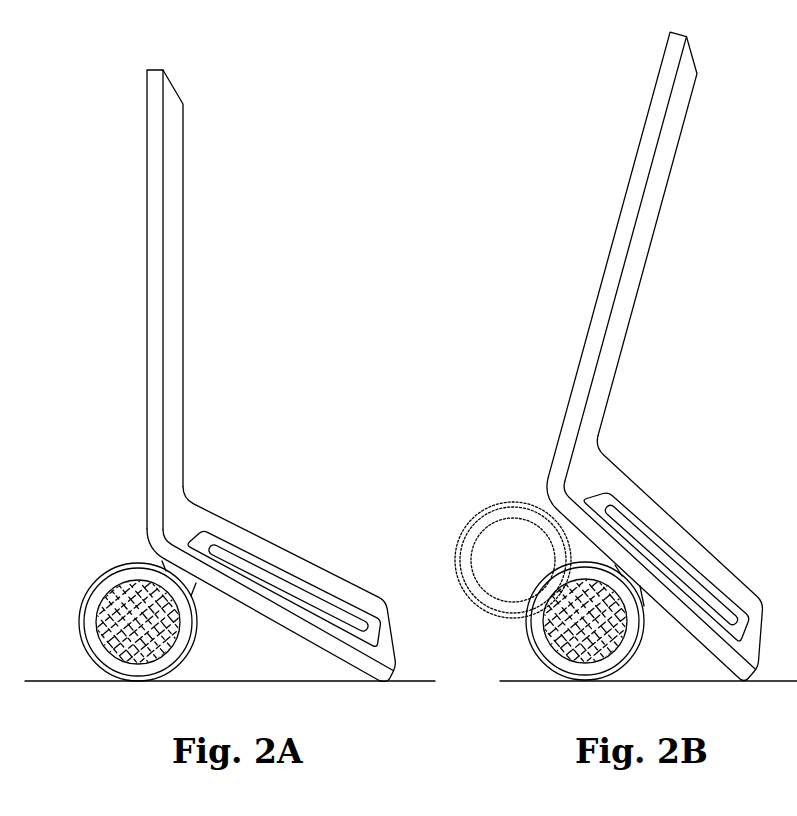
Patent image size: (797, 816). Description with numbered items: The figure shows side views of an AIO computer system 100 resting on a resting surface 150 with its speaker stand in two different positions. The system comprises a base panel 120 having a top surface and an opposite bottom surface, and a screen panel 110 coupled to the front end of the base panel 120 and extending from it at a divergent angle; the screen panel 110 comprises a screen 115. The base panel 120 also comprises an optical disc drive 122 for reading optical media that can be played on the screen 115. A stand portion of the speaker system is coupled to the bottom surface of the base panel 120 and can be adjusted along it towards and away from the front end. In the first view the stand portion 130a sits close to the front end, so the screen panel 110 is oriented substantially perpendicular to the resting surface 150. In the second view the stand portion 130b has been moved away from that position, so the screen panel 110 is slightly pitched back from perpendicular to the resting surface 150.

In FIG. 2A, the AIO computer system 100 is at (93, 101).
In FIG. 2B, the AIO computer system 100 is at (542, 100).
In FIG. 2A, the screen panel 110 is at (186, 197).
In FIG. 2B, the screen panel 110 is at (665, 195).
In FIG. 2A, the screen 115 is at (151, 230).
In FIG. 2B, the screen 115 is at (615, 230).
In FIG. 2A, the base panel 120 is at (272, 542).
In FIG. 2B, the base panel 120 is at (725, 567).
In FIG. 2A, the optical disc drive 122 is at (220, 552).
In FIG. 2B, the optical disc drive 122 is at (658, 555).
In FIG. 2A, the stand portion 130a is at (82, 619).
In FIG. 2B, the stand portion 130a is at (476, 528).
In FIG. 2B, the stand portion 130b is at (532, 630).
In FIG. 2A, the resting surface 150 is at (417, 679).
In FIG. 2B, the resting surface 150 is at (787, 679).